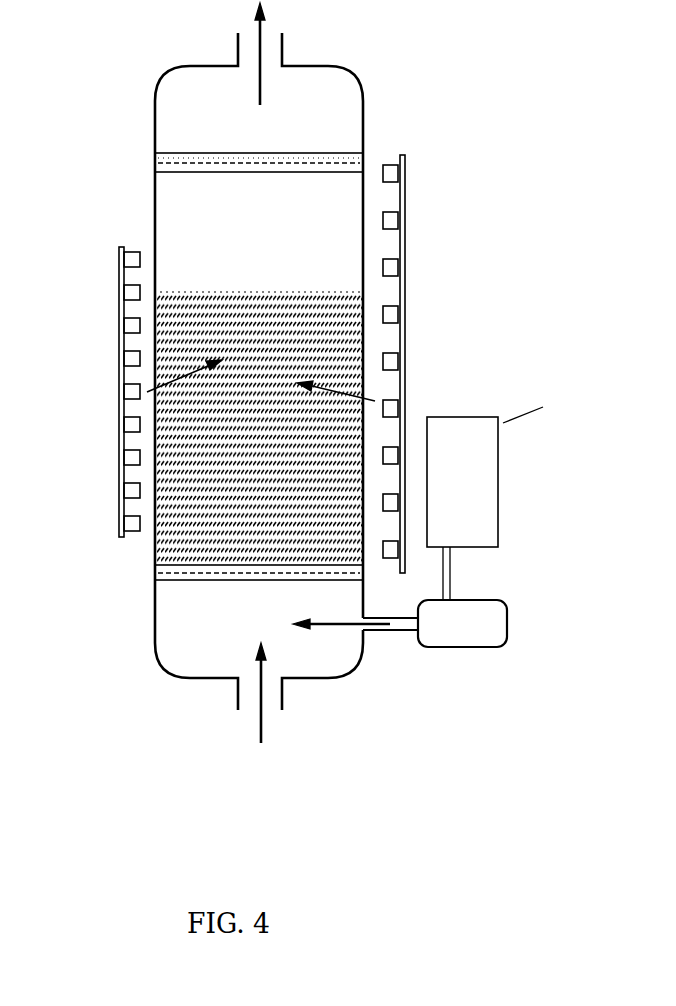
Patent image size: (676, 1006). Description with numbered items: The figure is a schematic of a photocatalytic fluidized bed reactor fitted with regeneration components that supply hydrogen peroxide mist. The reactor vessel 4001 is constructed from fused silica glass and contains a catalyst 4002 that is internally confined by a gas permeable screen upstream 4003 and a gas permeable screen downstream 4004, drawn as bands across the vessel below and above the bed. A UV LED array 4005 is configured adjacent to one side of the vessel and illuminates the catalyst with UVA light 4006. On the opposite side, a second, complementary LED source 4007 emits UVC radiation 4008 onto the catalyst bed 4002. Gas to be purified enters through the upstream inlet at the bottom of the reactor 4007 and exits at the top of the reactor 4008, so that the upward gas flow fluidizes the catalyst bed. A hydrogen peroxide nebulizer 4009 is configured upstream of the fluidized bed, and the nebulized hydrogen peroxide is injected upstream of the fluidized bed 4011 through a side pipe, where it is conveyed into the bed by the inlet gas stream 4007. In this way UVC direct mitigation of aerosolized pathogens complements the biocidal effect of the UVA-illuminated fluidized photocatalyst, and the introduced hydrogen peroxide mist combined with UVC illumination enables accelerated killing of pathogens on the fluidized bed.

The reactor vessel 4001 is at (147, 203).
The catalyst 4002 is at (197, 528).
The upstream gas permeable screen 4003 is at (258, 578).
The downstream gas permeable screen 4004 is at (290, 148).
The UV LED array 4005 is at (410, 240).
The UVA light 4006 is at (338, 382).
The second complementary LED source / upstream inlet 4007 is at (118, 425).
The UVC radiation / reactor outlet 4008 is at (196, 388).
The hydrogen peroxide nebulizer 4009 is at (473, 655).
The nebulized hydrogen peroxide injection 4011 is at (316, 632).